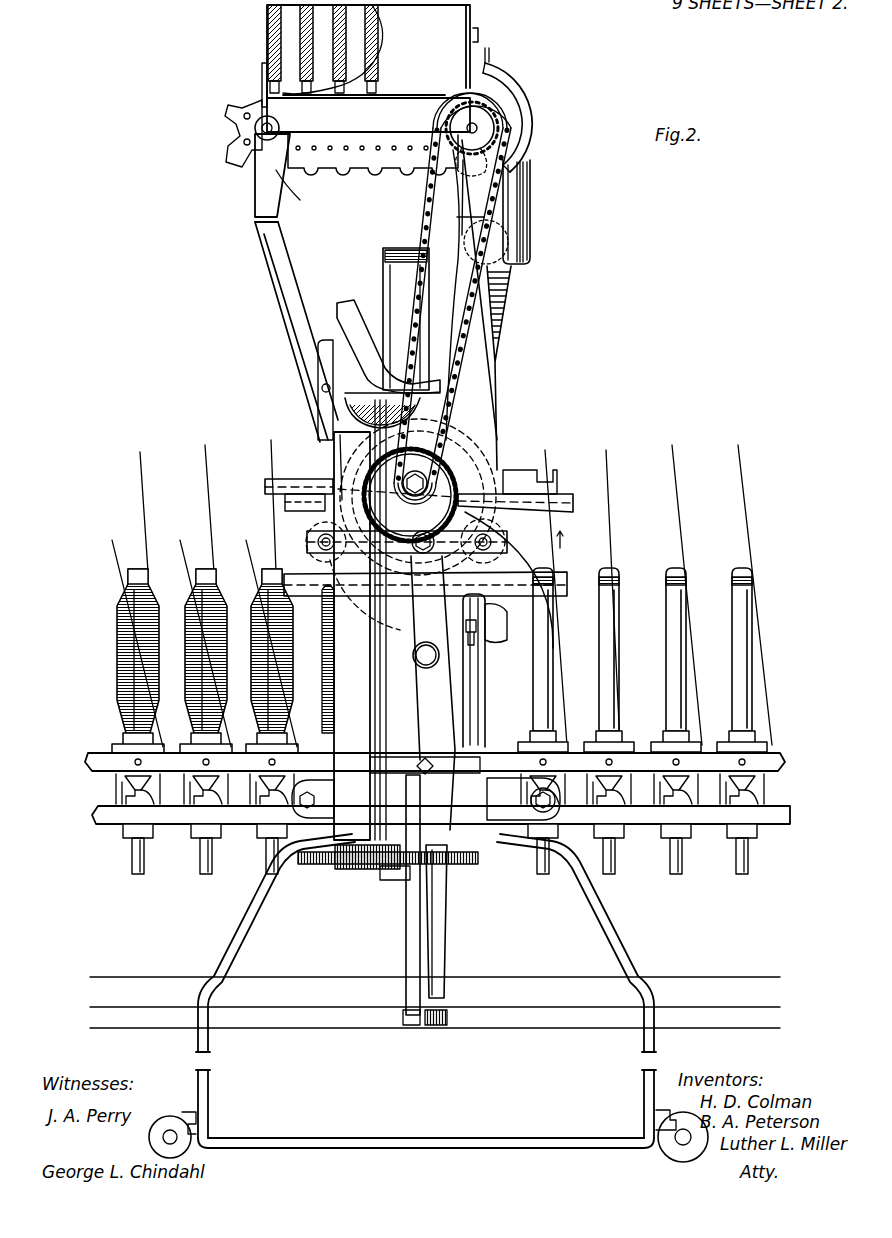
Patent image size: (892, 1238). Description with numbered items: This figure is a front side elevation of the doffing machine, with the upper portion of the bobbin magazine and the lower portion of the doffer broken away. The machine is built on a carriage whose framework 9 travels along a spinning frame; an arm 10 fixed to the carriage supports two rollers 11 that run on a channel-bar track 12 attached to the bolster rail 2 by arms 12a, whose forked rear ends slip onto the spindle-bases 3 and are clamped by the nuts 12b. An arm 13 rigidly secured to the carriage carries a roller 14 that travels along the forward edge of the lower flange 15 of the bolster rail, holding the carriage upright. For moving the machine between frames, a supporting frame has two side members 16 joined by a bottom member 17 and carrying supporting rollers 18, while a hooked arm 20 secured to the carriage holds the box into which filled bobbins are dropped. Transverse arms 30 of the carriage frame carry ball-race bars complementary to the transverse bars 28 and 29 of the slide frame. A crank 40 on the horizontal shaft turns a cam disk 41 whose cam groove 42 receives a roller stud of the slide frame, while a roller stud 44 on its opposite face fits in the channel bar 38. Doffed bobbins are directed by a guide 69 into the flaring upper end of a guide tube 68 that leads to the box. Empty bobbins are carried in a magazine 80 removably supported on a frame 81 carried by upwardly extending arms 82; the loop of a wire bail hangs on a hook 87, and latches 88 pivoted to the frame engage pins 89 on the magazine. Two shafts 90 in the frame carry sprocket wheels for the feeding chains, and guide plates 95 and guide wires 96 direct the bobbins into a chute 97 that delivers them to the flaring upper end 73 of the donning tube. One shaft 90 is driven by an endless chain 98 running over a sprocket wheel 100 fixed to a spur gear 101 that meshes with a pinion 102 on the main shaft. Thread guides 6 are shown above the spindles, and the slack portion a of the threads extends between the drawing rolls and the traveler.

The bolster rail 2 is at (770, 812).
The spindle-bases 3 is at (148, 868).
The thread guides 6 is at (128, 838).
The carriage framework 9 is at (452, 766).
The arm 10 is at (426, 799).
The rollers 11 is at (312, 795).
The track 12 is at (248, 840).
The arms 12a is at (160, 838).
The nuts 12b is at (118, 838).
The arm 13 is at (450, 948).
The roller 14 is at (437, 1026).
The lower flange 15 is at (518, 1022).
The side members 16 is at (240, 908).
The bottom member 17 is at (484, 1142).
The supporting rollers 18 is at (180, 1145).
The arm 20 is at (408, 940).
The transverse bar 28 is at (512, 492).
The transverse bar 29 is at (510, 603).
The transverse arms 30 is at (302, 480).
The channel bar 38 is at (556, 528).
The crank 40 is at (428, 668).
The cam disk 41 is at (322, 522).
The cam groove 42 is at (362, 450).
The roller stud 44 is at (472, 139).
The guide tube 68 is at (352, 590).
The guide 69 is at (352, 330).
The flaring upper end 73 is at (520, 286).
The magazine 80 is at (368, 51).
The frame 81 is at (368, 136).
The upwardly extending arms 82 is at (262, 234).
The hook 87 is at (483, 34).
The latches 88 is at (258, 100).
The pins 89 is at (261, 96).
The shafts 90 is at (275, 124).
The guide plates 95 is at (520, 140).
The guide wires 96 is at (528, 128).
The chute 97 is at (524, 215).
The endless chain 98 is at (428, 212).
The sprocket wheel 100 is at (455, 460).
The spur gear 101 is at (440, 472).
The pinion 102 is at (470, 528).
The portion of the threads a is at (212, 518).